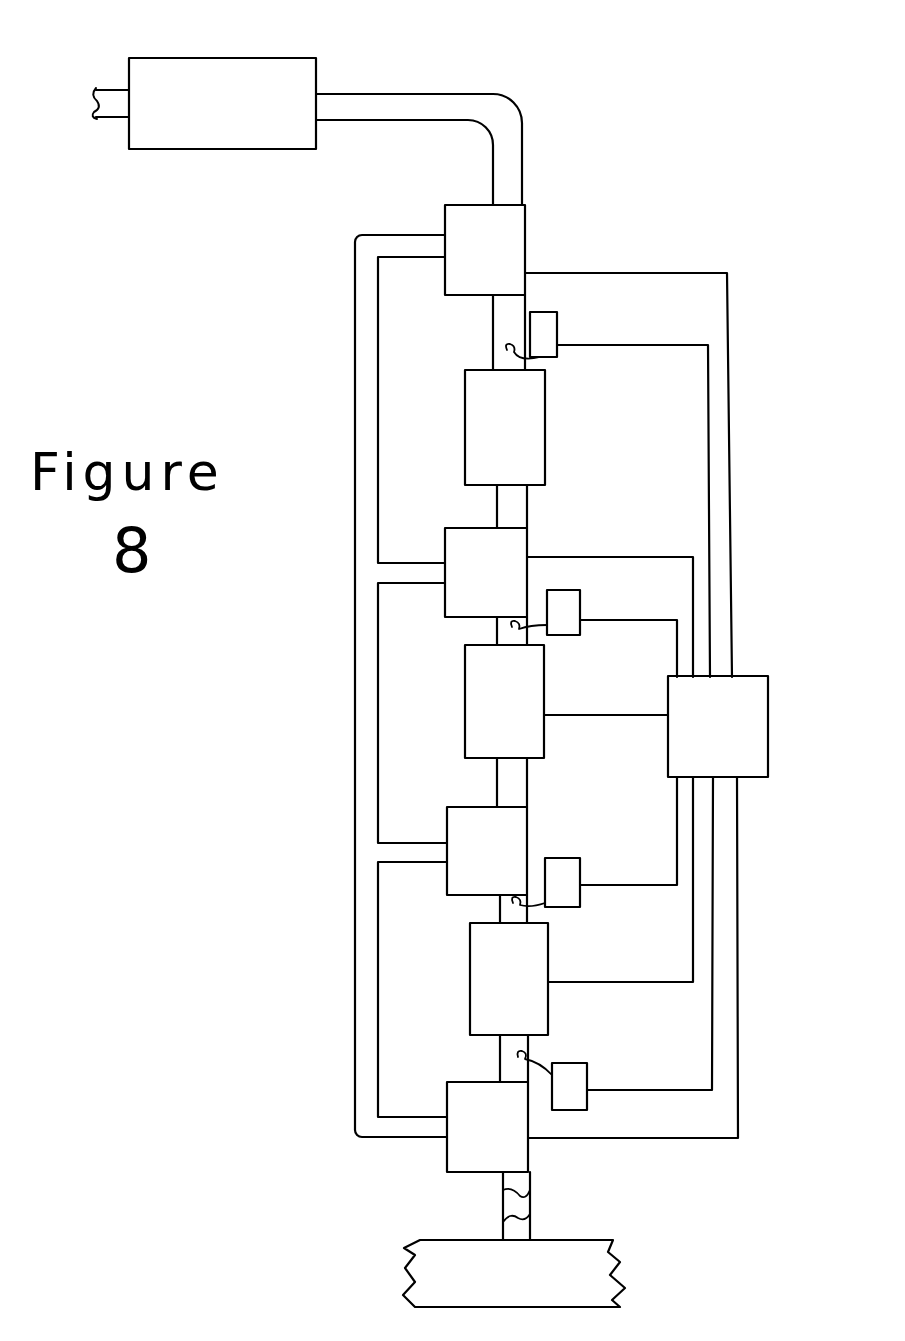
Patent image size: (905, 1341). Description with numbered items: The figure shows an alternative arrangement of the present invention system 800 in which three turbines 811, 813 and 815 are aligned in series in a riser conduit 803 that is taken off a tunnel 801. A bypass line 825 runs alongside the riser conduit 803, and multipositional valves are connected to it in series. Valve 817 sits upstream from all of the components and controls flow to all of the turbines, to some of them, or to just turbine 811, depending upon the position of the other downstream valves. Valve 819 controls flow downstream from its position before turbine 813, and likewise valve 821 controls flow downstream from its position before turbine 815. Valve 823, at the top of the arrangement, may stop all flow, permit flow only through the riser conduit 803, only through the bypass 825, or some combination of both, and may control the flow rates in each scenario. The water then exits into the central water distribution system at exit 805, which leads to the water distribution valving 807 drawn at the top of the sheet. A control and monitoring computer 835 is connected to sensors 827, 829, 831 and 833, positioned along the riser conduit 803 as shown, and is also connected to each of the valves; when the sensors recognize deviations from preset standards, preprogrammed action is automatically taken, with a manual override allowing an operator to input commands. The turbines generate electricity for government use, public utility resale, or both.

The system 800 is at (290, 718).
The tunnel 801 is at (437, 1240).
The riser conduit 803 is at (520, 1187).
The exit 805 is at (390, 97).
The water distribution valving 807 is at (252, 58).
The turbine 811 is at (472, 980).
The turbine 813 is at (465, 707).
The turbine 815 is at (465, 435).
The valve 817 is at (447, 1150).
The valve 819 is at (463, 805).
The valve 821 is at (467, 525).
The valve 823 is at (457, 204).
The bypass line 825 is at (356, 818).
The sensor 827 is at (580, 1065).
The sensor 829 is at (558, 858).
The sensor 831 is at (580, 597).
The sensor 833 is at (557, 333).
The control and monitoring computer 835 is at (748, 678).